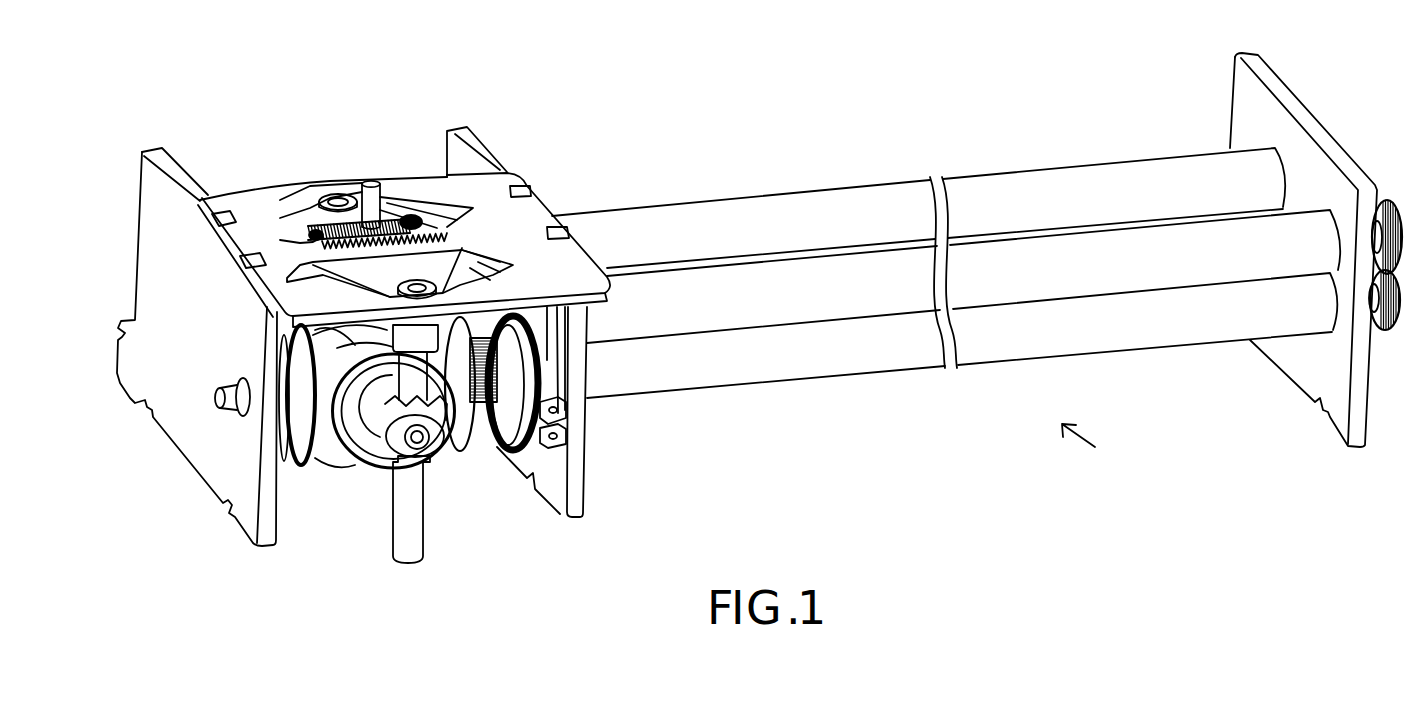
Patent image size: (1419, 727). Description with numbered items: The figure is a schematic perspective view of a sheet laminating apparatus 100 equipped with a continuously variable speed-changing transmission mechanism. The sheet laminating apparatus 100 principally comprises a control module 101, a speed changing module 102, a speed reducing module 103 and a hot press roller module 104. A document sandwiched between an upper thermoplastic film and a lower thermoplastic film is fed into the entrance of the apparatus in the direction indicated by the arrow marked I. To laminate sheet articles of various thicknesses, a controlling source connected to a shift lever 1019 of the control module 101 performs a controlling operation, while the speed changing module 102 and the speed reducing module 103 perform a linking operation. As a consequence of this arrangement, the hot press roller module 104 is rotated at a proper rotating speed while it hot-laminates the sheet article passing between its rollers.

The sheet laminating apparatus 100 is at (802, 46).
The control module 101 is at (490, 178).
The shift lever 1019 is at (371, 180).
The speed changing module 102 is at (357, 436).
The speed reducing module 103 is at (503, 408).
The hot press roller module 104 is at (1058, 244).